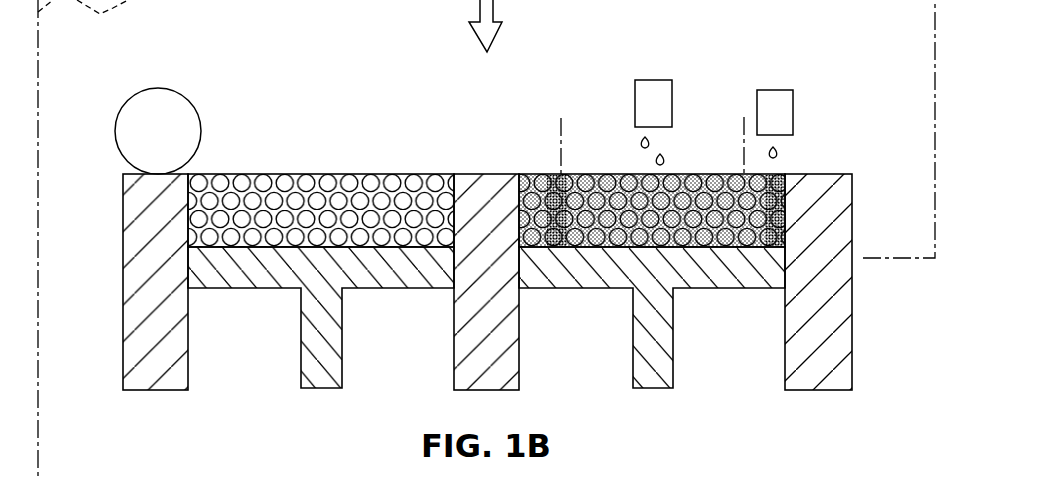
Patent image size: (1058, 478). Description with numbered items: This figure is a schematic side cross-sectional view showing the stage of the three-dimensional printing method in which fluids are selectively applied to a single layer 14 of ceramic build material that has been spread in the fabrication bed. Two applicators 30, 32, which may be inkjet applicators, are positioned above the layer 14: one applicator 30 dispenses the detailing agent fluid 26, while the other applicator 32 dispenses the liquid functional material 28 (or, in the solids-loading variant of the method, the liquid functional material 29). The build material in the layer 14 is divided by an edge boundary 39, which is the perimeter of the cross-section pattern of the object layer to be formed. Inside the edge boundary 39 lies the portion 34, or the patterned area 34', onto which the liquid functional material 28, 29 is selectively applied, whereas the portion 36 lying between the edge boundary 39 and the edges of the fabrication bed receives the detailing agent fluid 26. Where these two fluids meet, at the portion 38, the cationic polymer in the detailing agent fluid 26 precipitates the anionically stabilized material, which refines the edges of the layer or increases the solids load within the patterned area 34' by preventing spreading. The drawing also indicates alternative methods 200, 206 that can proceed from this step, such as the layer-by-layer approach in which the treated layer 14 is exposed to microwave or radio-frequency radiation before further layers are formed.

The layer 14 is at (795, 178).
The detailing agent fluid 26 is at (503, 174).
The liquid functional material 28 is at (709, 136).
The liquid functional material 29 is at (664, 160).
The applicator 30 is at (776, 107).
The applicator 32 is at (654, 97).
The portion 34 is at (486, 317).
The patterned area 34' is at (486, 317).
The portion 36 is at (520, 291).
The portion 38 is at (536, 174).
The edge boundary 39 is at (560, 132).
The method 200 is at (145, 87).
The alternative apparatus 206 is at (145, 87).